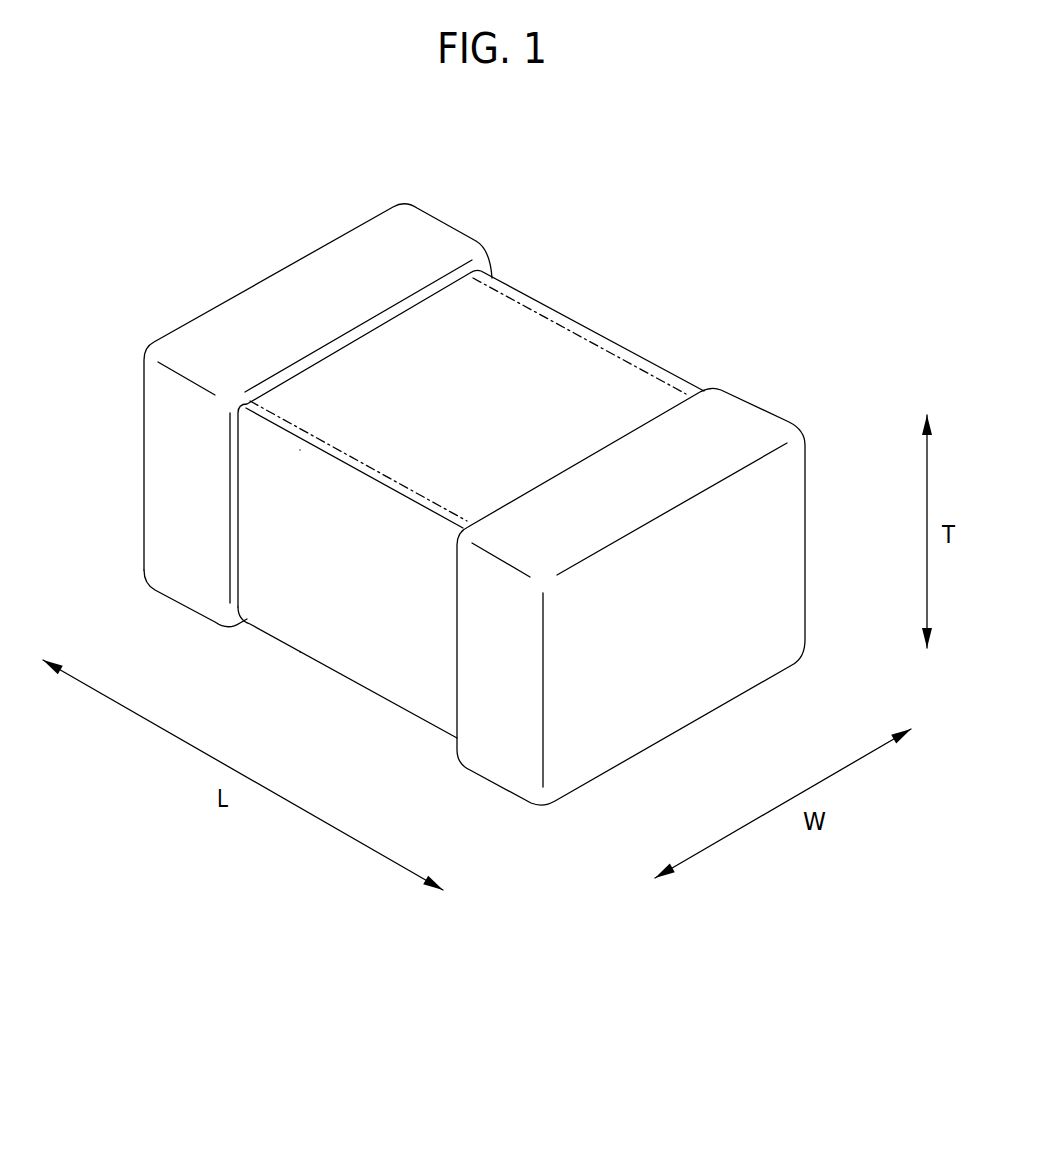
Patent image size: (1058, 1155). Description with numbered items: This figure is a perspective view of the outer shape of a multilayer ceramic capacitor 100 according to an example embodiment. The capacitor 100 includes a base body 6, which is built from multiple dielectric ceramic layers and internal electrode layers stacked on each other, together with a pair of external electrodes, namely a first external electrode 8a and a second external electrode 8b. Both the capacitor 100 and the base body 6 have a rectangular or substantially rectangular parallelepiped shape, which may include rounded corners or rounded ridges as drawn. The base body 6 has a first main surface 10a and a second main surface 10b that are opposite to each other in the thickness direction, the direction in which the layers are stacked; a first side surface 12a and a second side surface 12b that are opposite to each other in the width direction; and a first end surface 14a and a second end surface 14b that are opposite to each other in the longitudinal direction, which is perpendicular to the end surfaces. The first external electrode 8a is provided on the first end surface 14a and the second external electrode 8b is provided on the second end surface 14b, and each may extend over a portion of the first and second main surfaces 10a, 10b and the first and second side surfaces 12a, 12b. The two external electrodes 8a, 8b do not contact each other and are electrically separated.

The multilayer ceramic capacitor 100 is at (553, 973).
The base body 6 is at (387, 360).
The first external electrode 8a is at (410, 233).
The second external electrode 8b is at (757, 420).
The first main surface 10a is at (498, 323).
The second main surface 10b is at (423, 675).
The first side surface 12a is at (567, 362).
The second side surface 12b is at (378, 653).
The first end surface 14a is at (197, 467).
The second end surface 14b is at (680, 687).